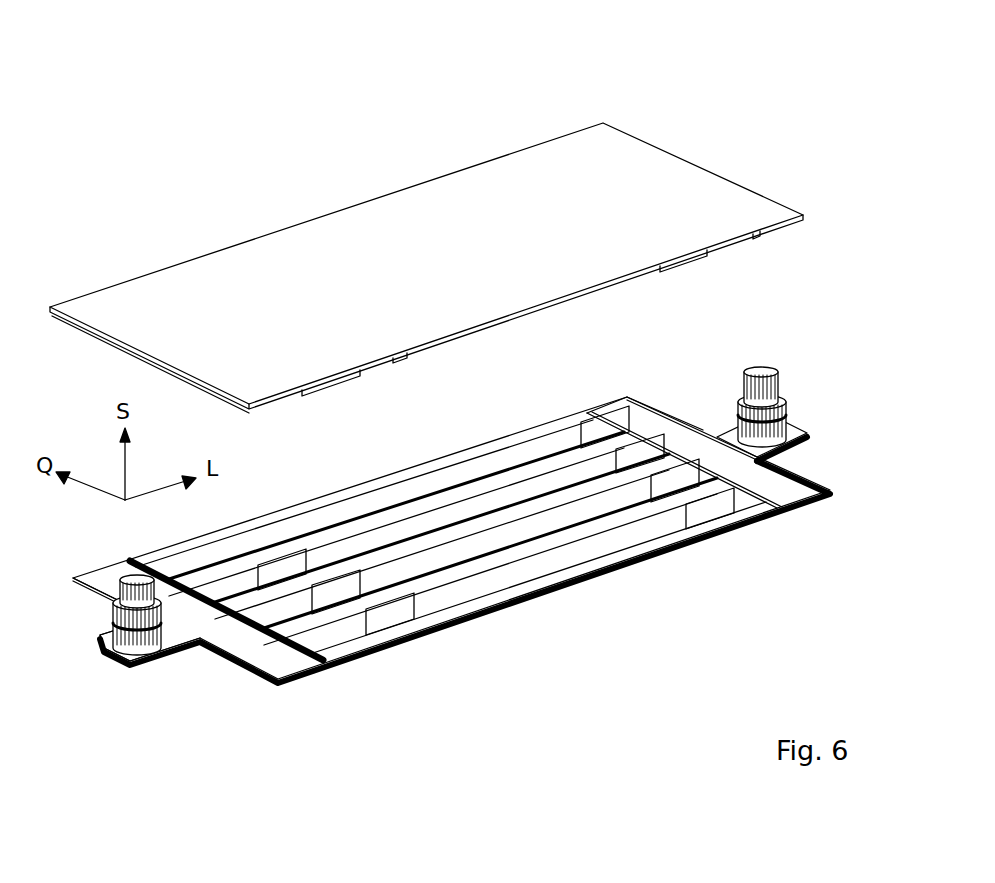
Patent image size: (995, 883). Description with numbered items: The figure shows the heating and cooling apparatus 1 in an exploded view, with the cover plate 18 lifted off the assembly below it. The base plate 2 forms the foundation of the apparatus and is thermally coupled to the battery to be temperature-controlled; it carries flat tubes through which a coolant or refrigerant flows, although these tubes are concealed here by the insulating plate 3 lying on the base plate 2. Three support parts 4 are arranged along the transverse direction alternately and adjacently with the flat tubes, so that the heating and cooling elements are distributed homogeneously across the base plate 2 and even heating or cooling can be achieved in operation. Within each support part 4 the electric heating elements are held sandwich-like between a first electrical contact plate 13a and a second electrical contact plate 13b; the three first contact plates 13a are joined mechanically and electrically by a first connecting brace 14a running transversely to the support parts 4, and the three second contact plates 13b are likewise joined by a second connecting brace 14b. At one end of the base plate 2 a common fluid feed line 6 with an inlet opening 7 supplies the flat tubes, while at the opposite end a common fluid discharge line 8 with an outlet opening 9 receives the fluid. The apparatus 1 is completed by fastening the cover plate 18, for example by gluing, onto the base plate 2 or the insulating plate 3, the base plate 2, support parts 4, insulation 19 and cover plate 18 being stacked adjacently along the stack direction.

The heating and cooling apparatus 1 is at (766, 154).
The base plate 2 is at (802, 482).
The insulating plate 3 is at (492, 512).
The support parts 4 is at (488, 473).
The fluid feed line 6 is at (100, 580).
The inlet opening 7 is at (110, 605).
The fluid discharge line 8 is at (660, 412).
The outlet opening 9 is at (763, 367).
The first electrical contact plate 13a is at (420, 582).
The second electrical contact plate 13b is at (507, 552).
The first connecting brace 14a is at (587, 429).
The second connecting brace 14b is at (280, 557).
The cover plate 18 is at (449, 180).
The insulation 19 is at (456, 512).